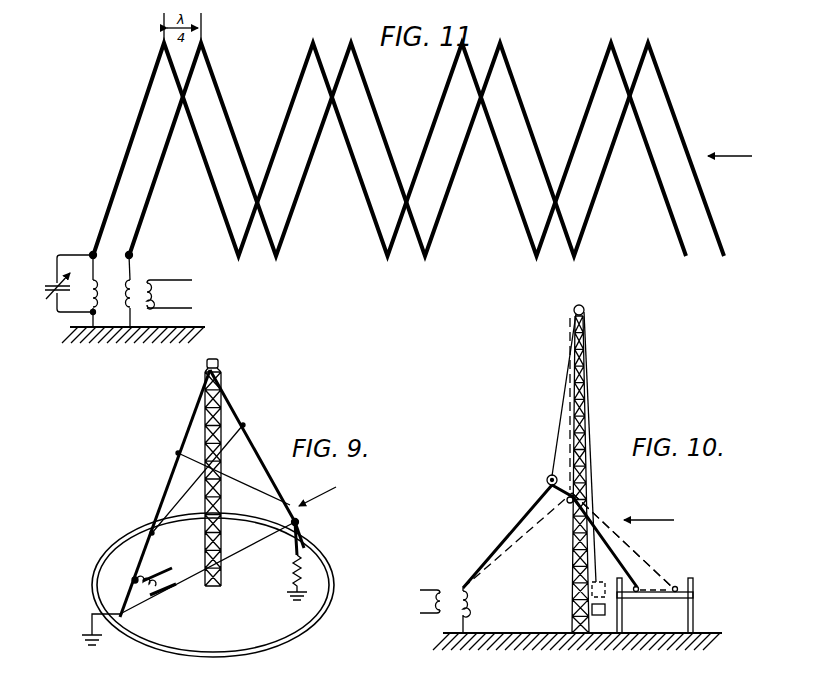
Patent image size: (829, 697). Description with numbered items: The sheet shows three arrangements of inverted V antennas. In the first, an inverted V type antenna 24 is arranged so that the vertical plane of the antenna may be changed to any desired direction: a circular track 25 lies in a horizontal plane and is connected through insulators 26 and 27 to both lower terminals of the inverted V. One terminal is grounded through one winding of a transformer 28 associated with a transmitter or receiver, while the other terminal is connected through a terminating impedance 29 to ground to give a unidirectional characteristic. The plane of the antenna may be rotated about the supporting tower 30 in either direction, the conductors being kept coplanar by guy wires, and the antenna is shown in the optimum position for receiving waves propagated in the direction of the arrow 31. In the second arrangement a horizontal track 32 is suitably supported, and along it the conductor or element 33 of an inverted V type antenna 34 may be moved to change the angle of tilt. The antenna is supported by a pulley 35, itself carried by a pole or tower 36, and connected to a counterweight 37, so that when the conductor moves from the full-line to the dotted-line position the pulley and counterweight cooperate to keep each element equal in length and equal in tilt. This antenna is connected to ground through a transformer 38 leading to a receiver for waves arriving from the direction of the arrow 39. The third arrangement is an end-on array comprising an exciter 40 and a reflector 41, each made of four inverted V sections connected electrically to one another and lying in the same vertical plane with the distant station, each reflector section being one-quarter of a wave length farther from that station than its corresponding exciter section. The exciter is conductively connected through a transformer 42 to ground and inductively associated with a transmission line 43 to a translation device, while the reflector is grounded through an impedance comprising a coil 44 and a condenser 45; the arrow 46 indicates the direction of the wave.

In FIG. 9, the inverted V type antenna 24 is at (204, 375).
In FIG. 9, the circular track 25 is at (335, 578).
In FIG. 9, the insulator 26 is at (128, 592).
In FIG. 9, the insulator 27 is at (299, 529).
In FIG. 9, the transformer 28 is at (150, 578).
In FIG. 9, the terminating impedance 29 is at (292, 566).
In FIG. 9, the supporting tower 30 is at (216, 418).
In FIG. 9, the arrow 31 is at (311, 500).
In FIG. 10, the horizontal track 32 is at (668, 586).
In FIG. 10, the conductor 33 is at (622, 534).
In FIG. 10, the inverted V type antenna 34 is at (556, 490).
In FIG. 10, the pulley 35 is at (574, 310).
In FIG. 10, the pole or tower 36 is at (585, 422).
In FIG. 10, the counterweight 37 is at (605, 609).
In FIG. 10, the transformer 38 is at (457, 590).
In FIG. 10, the arrow 39 is at (668, 521).
In FIG. 11, the exciter 40 is at (661, 74).
In FIG. 11, the reflector 41 is at (612, 50).
In FIG. 11, the transformer 42 is at (133, 326).
In FIG. 11, the transmission line 43 is at (163, 300).
In FIG. 11, the coil 44 is at (88, 305).
In FIG. 11, the condenser 45 is at (57, 270).
In FIG. 11, the arrow 46 is at (724, 159).